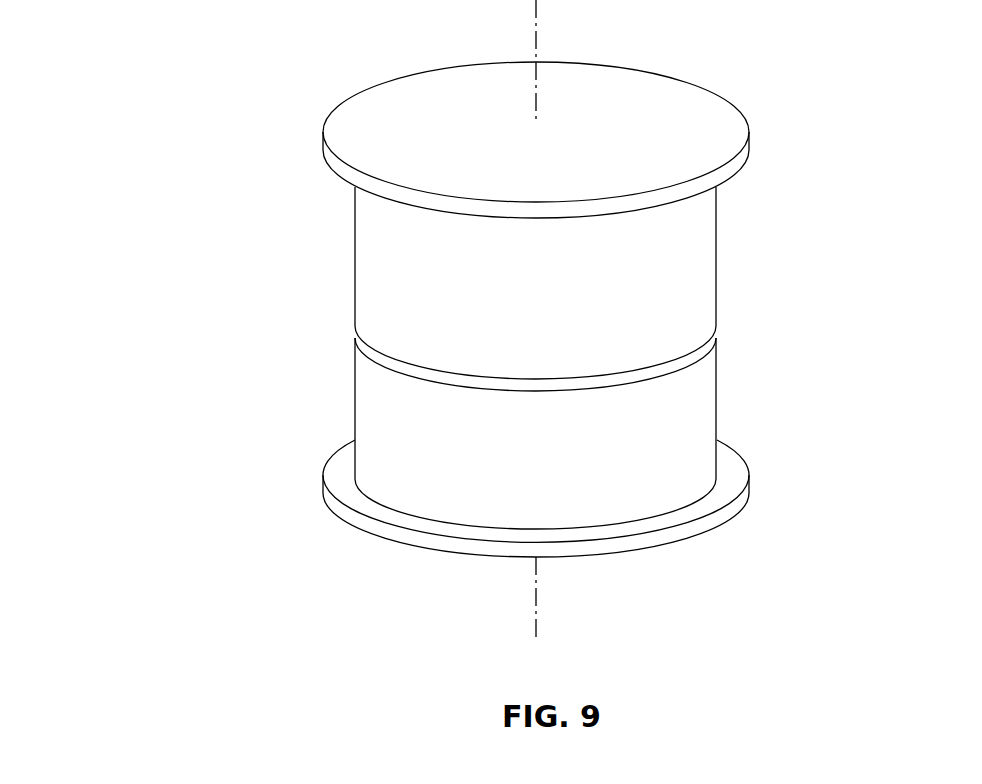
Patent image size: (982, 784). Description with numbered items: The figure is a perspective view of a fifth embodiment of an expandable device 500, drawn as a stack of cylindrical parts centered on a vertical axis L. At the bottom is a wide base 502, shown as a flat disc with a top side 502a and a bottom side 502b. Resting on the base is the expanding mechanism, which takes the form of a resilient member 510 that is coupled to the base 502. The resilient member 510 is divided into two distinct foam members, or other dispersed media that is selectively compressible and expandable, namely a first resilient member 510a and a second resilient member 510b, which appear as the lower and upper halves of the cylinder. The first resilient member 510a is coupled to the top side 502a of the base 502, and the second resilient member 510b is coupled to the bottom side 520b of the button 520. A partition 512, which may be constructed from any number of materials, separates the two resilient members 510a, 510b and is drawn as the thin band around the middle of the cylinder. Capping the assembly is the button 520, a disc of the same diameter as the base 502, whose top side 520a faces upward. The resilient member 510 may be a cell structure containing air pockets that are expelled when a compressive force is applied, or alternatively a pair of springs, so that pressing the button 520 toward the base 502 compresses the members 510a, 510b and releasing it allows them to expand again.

The expandable device 500 is at (145, 50).
The longitudinal axis L is at (537, 30).
The button 520 is at (745, 122).
The top side of the button 520a is at (655, 95).
The bottom side of the button 520b is at (695, 193).
The resilient member 510 is at (355, 333).
The first resilient member 510a is at (372, 407).
The second resilient member 510b is at (370, 267).
The partition 512 is at (367, 359).
The base 502 is at (750, 480).
The top side of the base 502a is at (732, 472).
The bottom side of the base 502b is at (725, 517).